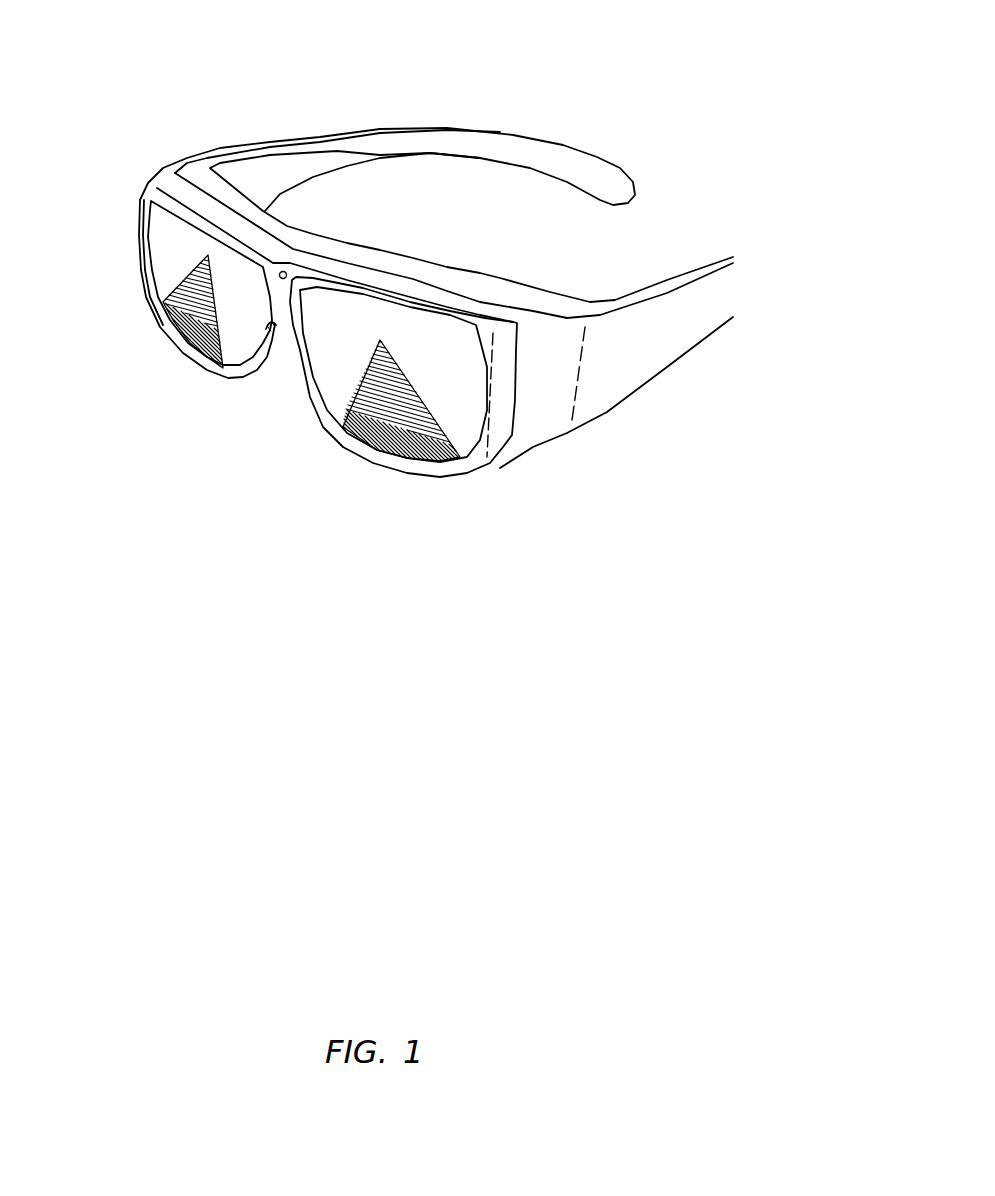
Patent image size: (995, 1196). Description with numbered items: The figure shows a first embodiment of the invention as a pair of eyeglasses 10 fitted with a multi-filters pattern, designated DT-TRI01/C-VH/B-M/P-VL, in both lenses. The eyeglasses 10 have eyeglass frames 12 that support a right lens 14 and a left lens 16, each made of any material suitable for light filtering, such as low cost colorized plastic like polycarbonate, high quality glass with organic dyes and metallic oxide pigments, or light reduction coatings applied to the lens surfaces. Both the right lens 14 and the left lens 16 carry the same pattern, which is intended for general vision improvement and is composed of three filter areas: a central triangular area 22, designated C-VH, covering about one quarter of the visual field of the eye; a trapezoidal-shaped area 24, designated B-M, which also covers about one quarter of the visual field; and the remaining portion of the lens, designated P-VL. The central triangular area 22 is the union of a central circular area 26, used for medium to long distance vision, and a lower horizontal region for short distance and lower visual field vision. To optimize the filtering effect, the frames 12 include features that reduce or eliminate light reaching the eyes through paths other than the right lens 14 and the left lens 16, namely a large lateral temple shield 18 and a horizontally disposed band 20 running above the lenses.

The eyeglasses 10 is at (249, 97).
The eyeglass frames 12 is at (276, 130).
The right lens 14 is at (162, 257).
The left lens 16 is at (309, 397).
The lateral temple shield 18 is at (553, 443).
The horizontally disposed band 20 is at (388, 250).
The central triangular area 22 is at (380, 392).
The trapezoidal-shaped area 24 is at (403, 455).
The central circular area 26 is at (453, 397).